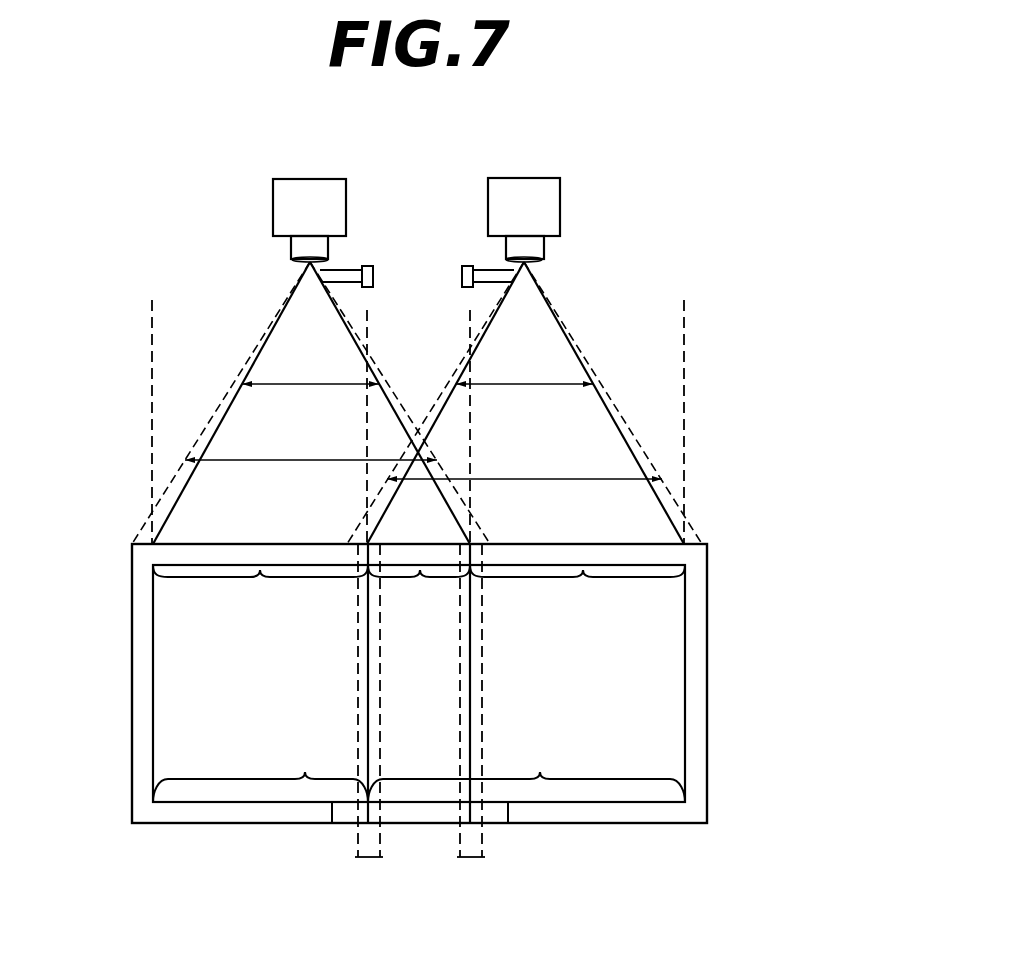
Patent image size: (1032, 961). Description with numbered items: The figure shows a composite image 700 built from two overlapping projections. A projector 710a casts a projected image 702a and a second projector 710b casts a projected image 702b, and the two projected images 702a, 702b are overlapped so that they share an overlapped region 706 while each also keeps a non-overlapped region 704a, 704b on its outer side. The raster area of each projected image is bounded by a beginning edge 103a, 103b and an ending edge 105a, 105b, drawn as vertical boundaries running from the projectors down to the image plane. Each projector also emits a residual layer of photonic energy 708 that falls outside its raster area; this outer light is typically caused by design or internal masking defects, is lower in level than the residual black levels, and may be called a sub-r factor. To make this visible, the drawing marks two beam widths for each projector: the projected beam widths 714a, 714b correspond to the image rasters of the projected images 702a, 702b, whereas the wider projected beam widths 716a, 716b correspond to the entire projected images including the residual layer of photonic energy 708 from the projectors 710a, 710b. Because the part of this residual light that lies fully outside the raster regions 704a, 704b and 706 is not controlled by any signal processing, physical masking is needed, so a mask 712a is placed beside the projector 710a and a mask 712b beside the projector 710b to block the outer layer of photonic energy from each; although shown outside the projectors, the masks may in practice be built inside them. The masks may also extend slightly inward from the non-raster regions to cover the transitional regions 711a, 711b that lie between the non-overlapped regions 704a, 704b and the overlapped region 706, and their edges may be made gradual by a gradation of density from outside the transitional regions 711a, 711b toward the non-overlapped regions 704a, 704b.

The composite image 700 is at (709, 607).
The projected image 702a is at (305, 772).
The projected image 702b is at (540, 772).
The non-overlapped region 704a is at (260, 570).
The non-overlapped region 704b is at (583, 570).
The overlapped region 706 is at (420, 570).
The residual layer of photonic energy 708 is at (709, 733).
The projector 710a is at (273, 197).
The projector 710b is at (560, 197).
The transitional region 711a is at (369, 857).
The transitional region 711b is at (471, 857).
The mask 712a is at (373, 270).
The mask 712b is at (457, 266).
The projected beam width 714a is at (308, 385).
The projected beam width 714b is at (517, 385).
The projected beam width 716a is at (309, 462).
The projected beam width 716b is at (517, 480).
The beginning edge 103a is at (152, 300).
The beginning edge 103b is at (367, 313).
The ending edge 105a is at (469, 311).
The ending edge 105b is at (684, 300).